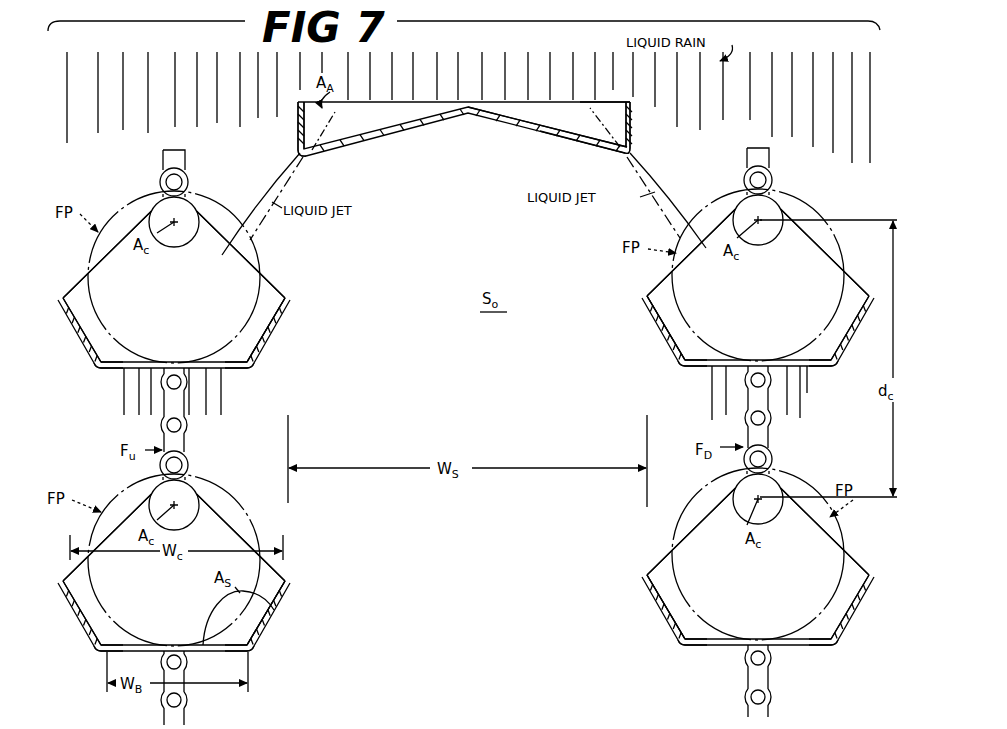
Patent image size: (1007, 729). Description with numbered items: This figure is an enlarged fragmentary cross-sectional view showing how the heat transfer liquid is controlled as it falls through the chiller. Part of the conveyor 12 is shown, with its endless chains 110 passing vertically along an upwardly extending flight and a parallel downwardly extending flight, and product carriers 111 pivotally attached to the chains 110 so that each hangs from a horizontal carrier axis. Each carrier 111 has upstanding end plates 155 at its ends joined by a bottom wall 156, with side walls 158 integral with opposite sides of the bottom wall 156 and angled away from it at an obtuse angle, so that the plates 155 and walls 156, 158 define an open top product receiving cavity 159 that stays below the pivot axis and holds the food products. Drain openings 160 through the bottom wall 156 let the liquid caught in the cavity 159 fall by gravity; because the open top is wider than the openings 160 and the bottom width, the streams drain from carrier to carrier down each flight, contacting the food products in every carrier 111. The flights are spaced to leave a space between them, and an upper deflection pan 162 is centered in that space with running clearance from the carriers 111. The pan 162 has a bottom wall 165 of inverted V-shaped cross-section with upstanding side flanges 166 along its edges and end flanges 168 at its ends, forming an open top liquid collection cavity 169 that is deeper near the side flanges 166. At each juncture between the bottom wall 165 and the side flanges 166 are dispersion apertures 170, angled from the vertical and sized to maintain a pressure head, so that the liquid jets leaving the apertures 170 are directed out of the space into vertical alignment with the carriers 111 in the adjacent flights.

The conveyor 12 is at (152, 710).
The endless chains 110 is at (187, 440).
The carrier 111 is at (262, 358).
The end plates 155 is at (267, 307).
The bottom wall 156 is at (233, 370).
The side walls 158 is at (273, 328).
The product receiving cavity 159 is at (273, 292).
The drain openings 160 is at (130, 367).
The upper deflection pan 162 is at (395, 132).
The bottom wall 165 is at (505, 120).
The side flanges 166 is at (298, 128).
The end flanges 168 is at (558, 128).
The liquid collection cavity 169 is at (587, 104).
The dispersion apertures 170 is at (305, 158).